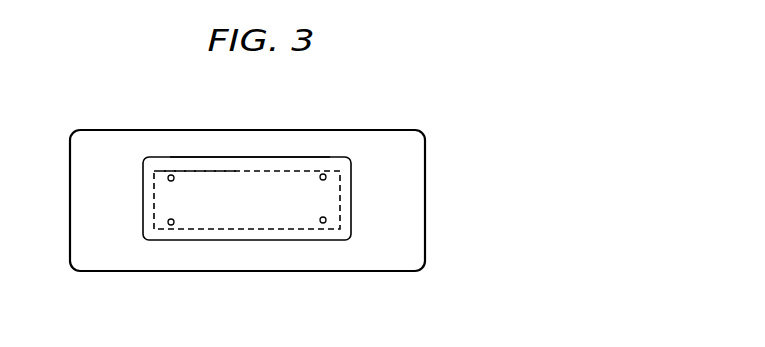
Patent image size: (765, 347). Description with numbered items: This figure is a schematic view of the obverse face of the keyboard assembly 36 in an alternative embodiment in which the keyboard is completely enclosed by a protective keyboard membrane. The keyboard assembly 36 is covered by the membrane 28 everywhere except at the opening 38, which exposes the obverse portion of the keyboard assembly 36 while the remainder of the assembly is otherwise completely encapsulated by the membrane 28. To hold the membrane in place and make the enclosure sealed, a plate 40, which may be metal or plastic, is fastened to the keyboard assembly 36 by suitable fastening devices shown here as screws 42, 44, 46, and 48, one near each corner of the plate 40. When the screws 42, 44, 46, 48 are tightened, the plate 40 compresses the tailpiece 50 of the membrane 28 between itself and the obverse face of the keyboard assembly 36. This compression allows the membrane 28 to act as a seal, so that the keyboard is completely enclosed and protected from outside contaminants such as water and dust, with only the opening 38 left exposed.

The membrane 28 is at (351, 197).
The keyboard assembly 36 is at (87, 199).
The opening 38 is at (234, 225).
The plate 40 is at (252, 157).
The screw 42 is at (171, 175).
The screw 44 is at (171, 225).
The screw 46 is at (323, 174).
The screw 48 is at (323, 223).
The tailpiece 50 is at (198, 168).